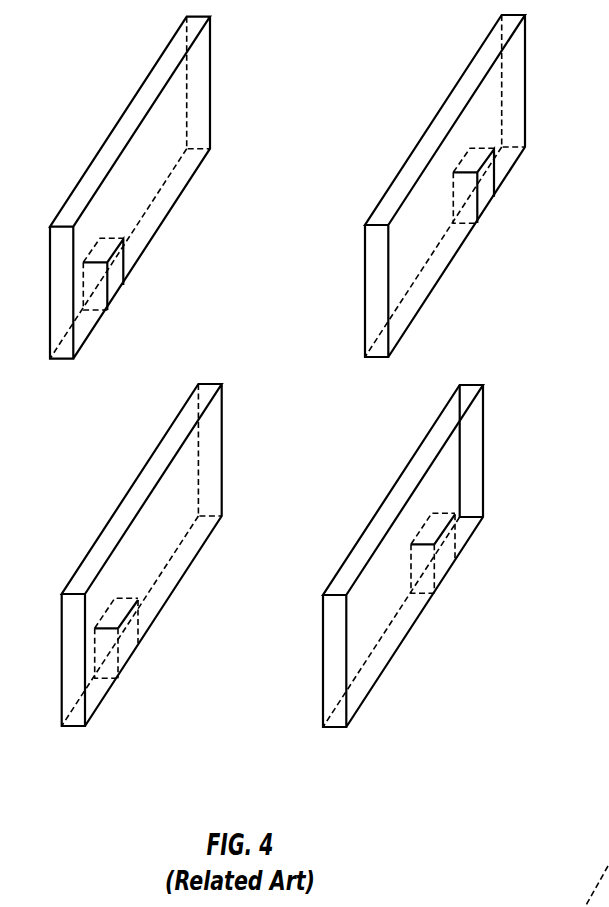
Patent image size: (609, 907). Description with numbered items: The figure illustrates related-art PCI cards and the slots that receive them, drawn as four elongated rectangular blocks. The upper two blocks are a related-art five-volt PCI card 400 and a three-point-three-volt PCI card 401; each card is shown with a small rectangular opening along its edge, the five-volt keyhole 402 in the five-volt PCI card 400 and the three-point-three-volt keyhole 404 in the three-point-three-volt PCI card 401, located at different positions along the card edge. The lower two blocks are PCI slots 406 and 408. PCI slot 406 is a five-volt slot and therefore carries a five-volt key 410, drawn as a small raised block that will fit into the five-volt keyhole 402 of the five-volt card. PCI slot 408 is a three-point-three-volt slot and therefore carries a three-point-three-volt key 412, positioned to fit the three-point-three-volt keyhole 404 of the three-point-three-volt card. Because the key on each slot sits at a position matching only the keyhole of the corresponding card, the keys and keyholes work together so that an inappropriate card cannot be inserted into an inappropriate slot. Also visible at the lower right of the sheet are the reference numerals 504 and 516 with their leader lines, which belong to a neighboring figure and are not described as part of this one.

The 5V PCI card 400 is at (527, 75).
The 3.3V PCI card 401 is at (212, 78).
The 5V keyhole 402 is at (485, 210).
The 3.3V keyhole 404 is at (117, 297).
The PCI slot 406 is at (485, 435).
The PCI slot 408 is at (223, 433).
The 5V key 410 is at (445, 553).
The 3.3V key 412 is at (125, 643).
The component of FIG. 5 (partial) 504 is at (608, 815).
The component of FIG. 5 (partial) 516 is at (608, 864).